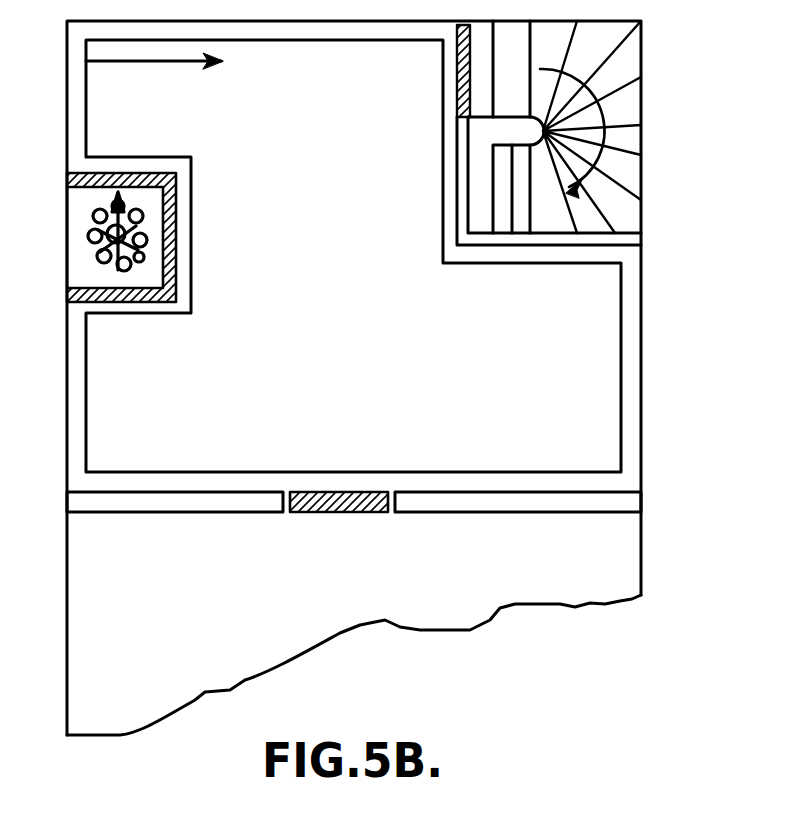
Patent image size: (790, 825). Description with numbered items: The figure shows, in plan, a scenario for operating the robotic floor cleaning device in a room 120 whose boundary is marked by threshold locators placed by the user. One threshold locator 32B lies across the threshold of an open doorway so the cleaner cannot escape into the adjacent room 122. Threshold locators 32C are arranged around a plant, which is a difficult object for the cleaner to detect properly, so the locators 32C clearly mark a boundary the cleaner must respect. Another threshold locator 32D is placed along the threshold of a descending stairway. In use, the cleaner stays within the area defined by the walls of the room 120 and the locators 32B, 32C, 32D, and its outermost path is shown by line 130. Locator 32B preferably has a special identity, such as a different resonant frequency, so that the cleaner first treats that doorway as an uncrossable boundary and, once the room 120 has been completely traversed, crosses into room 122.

The room 120 is at (357, 383).
The adjacent room 122 is at (195, 636).
The outermost path line 130 is at (420, 472).
The threshold locator 32B is at (337, 513).
The threshold locators 32C is at (176, 211).
The threshold locator 32D is at (457, 72).